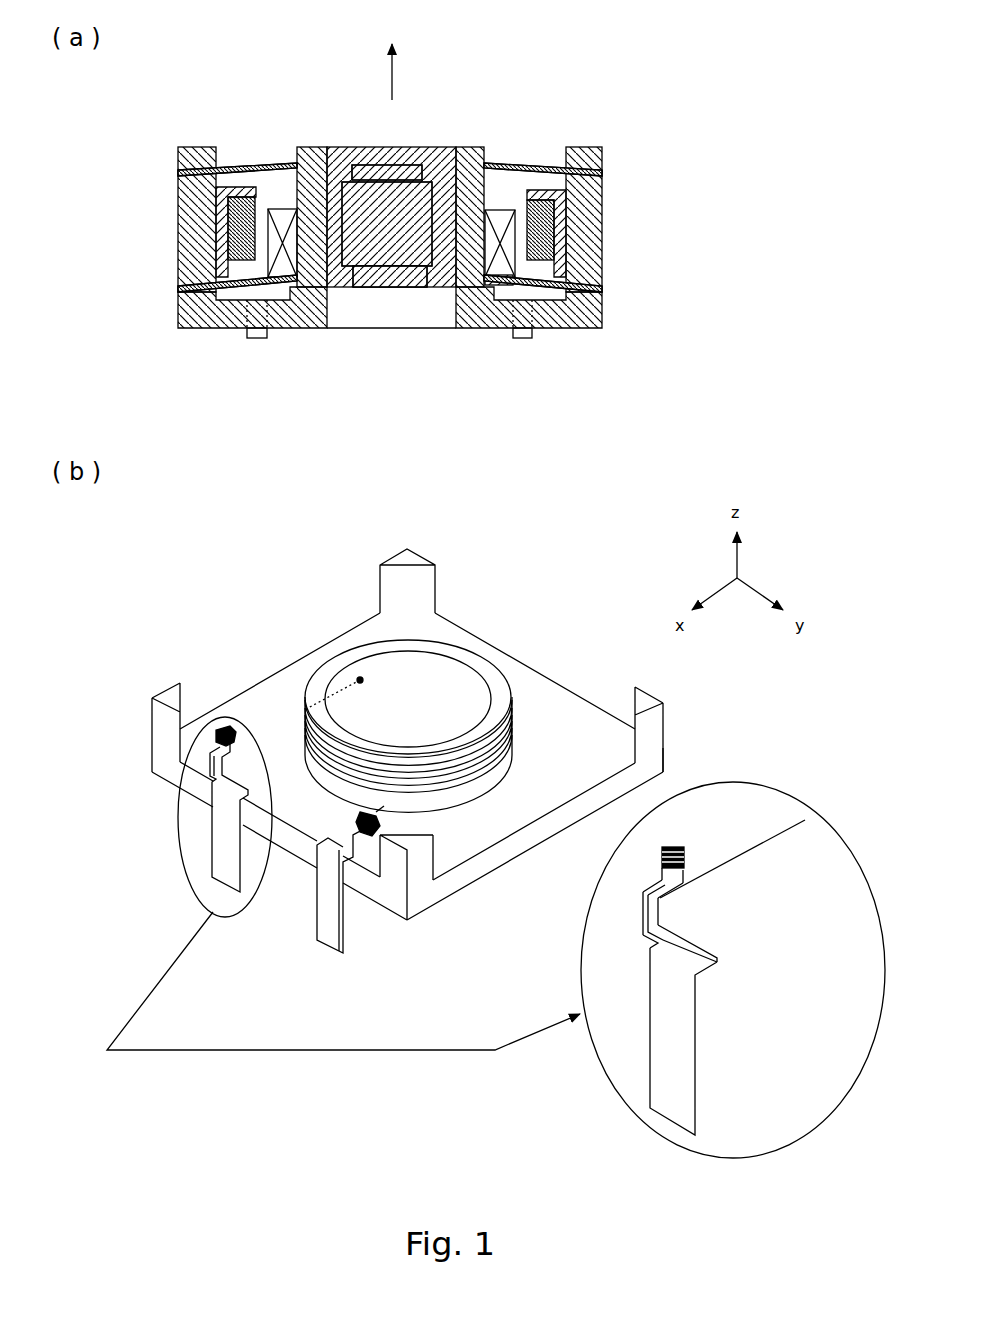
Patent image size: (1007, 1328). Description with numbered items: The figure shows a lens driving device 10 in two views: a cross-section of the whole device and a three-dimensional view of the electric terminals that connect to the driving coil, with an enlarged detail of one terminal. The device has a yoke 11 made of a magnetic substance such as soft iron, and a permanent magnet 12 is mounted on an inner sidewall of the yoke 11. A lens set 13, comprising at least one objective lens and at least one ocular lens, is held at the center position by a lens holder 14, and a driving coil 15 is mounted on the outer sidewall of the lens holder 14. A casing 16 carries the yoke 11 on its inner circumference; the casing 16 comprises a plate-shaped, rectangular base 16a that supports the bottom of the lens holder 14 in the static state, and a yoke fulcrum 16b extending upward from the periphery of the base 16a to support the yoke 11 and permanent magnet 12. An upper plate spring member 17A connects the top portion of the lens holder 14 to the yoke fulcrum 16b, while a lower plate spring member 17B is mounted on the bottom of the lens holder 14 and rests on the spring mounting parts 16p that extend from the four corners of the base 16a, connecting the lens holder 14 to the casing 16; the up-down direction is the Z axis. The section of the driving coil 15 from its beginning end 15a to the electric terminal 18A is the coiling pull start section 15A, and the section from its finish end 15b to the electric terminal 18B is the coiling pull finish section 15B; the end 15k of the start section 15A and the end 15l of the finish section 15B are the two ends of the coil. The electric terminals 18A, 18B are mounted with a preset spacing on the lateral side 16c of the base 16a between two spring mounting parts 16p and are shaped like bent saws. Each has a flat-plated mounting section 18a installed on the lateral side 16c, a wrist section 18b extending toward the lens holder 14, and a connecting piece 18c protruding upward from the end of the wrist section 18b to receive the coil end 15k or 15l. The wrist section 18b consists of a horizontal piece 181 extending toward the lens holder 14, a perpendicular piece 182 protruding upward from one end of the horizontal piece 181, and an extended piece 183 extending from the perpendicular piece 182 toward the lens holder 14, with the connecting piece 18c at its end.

The lens driving device 10 is at (455, 131).
The yoke 11 is at (556, 226).
The permanent magnet 12 is at (575, 262).
The lens set 13 is at (380, 147).
The lens holder 14 is at (480, 147).
The driving coil 15 is at (560, 198).
The beginning end 15a is at (352, 670).
The finish end 15b is at (495, 772).
The end of coiling pull start section 15k is at (213, 737).
The end of coiling pull finish section 15l is at (382, 833).
The coiling pull start section 15A is at (277, 725).
The coiling pull finish section 15B is at (417, 813).
The casing 16 is at (178, 308).
The base 16a is at (593, 312).
The yoke fulcrum 16b is at (603, 150).
The lateral side 16c is at (288, 843).
The spring mounting part 16p is at (432, 580).
The upper plate spring member 17A is at (178, 155).
The lower plate spring member 17B is at (217, 283).
The electric terminal 18A is at (273, 293).
The electric terminal 18B is at (533, 297).
The mounting section 18a is at (322, 927).
The wrist section 18b is at (345, 865).
The connecting piece 18c is at (363, 857).
The horizontal piece 181 is at (688, 949).
The perpendicular piece 182 is at (653, 920).
The extended piece 183 is at (663, 888).